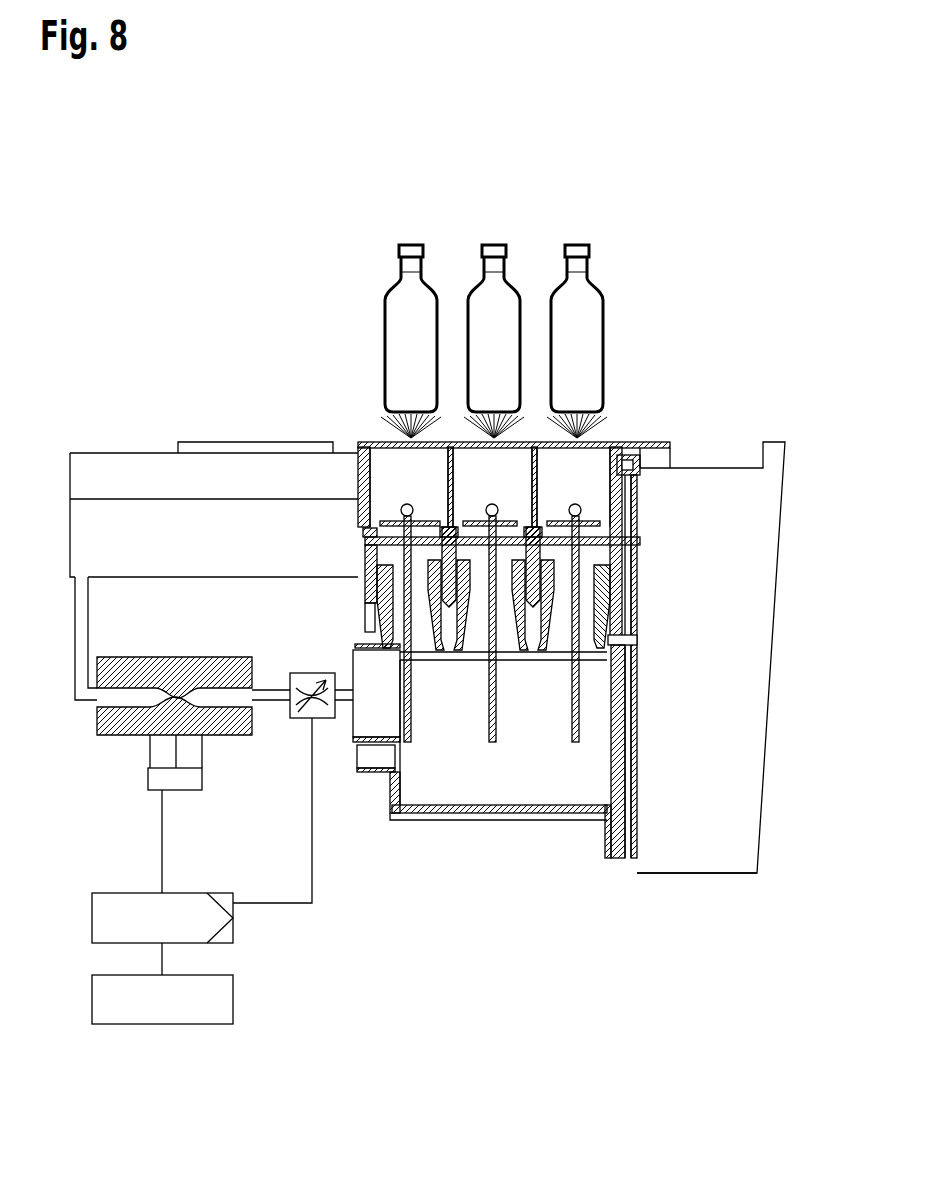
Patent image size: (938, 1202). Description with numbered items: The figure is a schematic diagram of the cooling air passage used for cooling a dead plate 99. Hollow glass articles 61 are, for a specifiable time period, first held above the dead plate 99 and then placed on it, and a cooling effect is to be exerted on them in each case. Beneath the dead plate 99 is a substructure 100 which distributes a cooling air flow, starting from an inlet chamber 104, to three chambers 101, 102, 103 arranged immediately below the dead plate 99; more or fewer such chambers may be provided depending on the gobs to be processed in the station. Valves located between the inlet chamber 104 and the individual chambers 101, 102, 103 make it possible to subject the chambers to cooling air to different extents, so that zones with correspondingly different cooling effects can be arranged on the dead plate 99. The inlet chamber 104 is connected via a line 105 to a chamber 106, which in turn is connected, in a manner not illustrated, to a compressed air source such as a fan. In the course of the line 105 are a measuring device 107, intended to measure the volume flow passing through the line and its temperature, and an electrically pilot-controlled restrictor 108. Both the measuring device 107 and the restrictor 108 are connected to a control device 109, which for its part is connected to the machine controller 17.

The hollow glass articles 61 is at (577, 256).
The dead plate 99 is at (636, 446).
The substructure of the dead plate 100 is at (533, 773).
The chamber 101 is at (390, 491).
The chamber 102 is at (478, 491).
The chamber 103 is at (555, 491).
The inlet chamber 104 is at (430, 783).
The line 105 is at (272, 694).
The chamber 106 is at (195, 549).
The measuring device 107 is at (173, 672).
The electrically pilot-controlled restrictor 108 is at (308, 678).
The control device 109 is at (233, 931).
The machine controller 17 is at (233, 996).